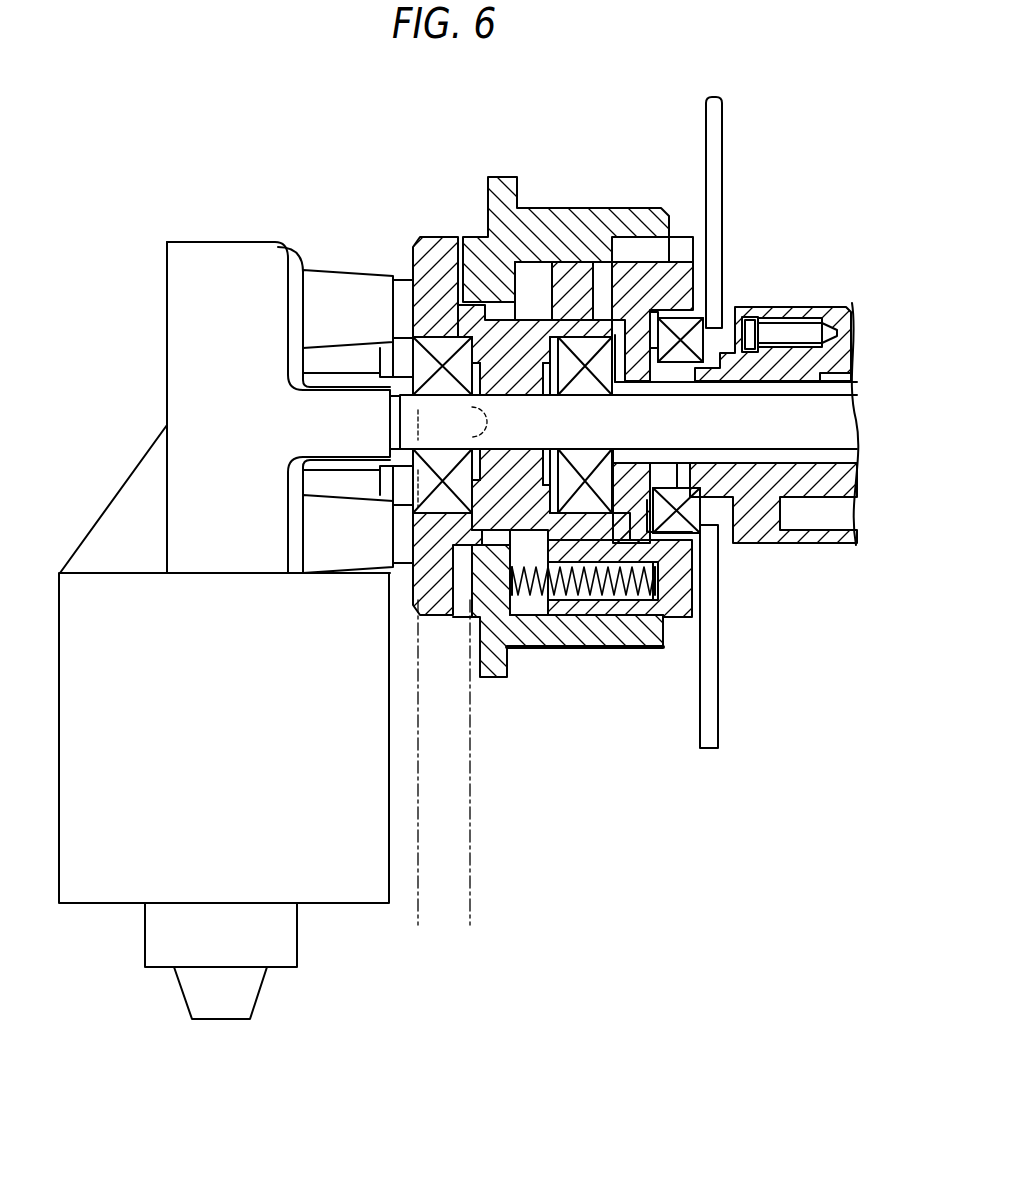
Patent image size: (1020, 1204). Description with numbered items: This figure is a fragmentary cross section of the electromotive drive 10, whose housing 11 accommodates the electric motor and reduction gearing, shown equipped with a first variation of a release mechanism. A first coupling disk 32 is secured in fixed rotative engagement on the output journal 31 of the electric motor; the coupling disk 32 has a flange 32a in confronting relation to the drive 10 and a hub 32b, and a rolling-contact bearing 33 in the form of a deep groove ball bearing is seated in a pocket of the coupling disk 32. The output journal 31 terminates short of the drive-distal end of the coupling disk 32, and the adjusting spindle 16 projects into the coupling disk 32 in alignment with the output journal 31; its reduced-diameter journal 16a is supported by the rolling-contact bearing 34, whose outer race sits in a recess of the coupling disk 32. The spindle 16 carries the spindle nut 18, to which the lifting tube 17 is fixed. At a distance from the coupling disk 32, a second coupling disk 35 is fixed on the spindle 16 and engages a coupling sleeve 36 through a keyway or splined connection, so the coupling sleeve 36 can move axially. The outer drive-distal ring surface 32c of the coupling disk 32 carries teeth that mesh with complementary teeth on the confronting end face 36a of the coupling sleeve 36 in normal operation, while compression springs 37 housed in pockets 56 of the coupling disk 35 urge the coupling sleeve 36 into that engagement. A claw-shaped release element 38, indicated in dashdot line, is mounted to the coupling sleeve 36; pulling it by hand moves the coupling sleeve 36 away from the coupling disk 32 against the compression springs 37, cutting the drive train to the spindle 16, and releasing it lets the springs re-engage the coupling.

The electromotive drive 10 is at (264, 213).
The housing 11 is at (215, 403).
The adjusting spindle 16 is at (835, 432).
The journal 16a is at (590, 440).
The lifting tube 17 is at (850, 316).
The spindle nut 18 is at (770, 340).
The output journal 31 is at (510, 415).
The first coupling disk 32 is at (450, 222).
The flange 32a is at (433, 242).
The hub 32b is at (497, 500).
The ring surface 32c is at (420, 620).
The rolling-contact bearing 33 is at (422, 357).
The rolling-contact bearing 34 is at (578, 505).
The second coupling disk 35 is at (655, 275).
The coupling sleeve 36 is at (590, 218).
The end face 36a is at (457, 620).
The compression spring 37 is at (532, 600).
The release element 38 is at (440, 905).
The pocket 56 is at (657, 585).